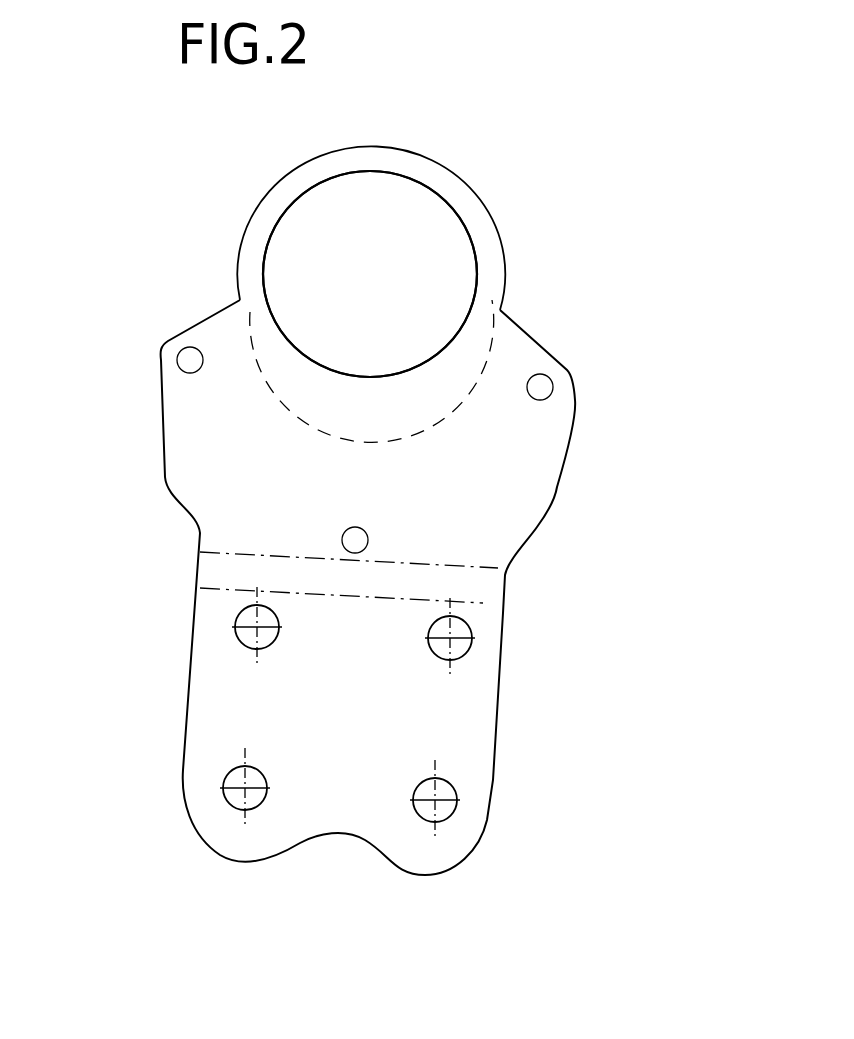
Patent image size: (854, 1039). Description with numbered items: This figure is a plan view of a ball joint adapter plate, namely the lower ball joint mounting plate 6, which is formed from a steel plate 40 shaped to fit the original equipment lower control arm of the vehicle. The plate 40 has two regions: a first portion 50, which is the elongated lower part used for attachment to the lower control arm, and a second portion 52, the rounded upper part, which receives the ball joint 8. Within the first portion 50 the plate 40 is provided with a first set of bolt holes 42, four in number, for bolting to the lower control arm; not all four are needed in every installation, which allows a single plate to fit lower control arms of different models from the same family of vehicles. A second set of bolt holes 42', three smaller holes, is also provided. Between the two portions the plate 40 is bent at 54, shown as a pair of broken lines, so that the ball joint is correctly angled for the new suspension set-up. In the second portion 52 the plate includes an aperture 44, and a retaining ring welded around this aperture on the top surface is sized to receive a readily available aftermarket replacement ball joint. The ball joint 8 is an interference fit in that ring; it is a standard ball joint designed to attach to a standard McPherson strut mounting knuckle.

The lower ball joint mounting plate 6 is at (341, 882).
The ball joint 8 is at (383, 272).
The steel plate 40 is at (462, 866).
The first set of bolt holes 42 is at (433, 703).
The second set of bolt holes 42' is at (459, 416).
The aperture 44 is at (267, 230).
The first portion 50 is at (582, 392).
The second portion 52 is at (443, 175).
The bend 54 is at (198, 582).